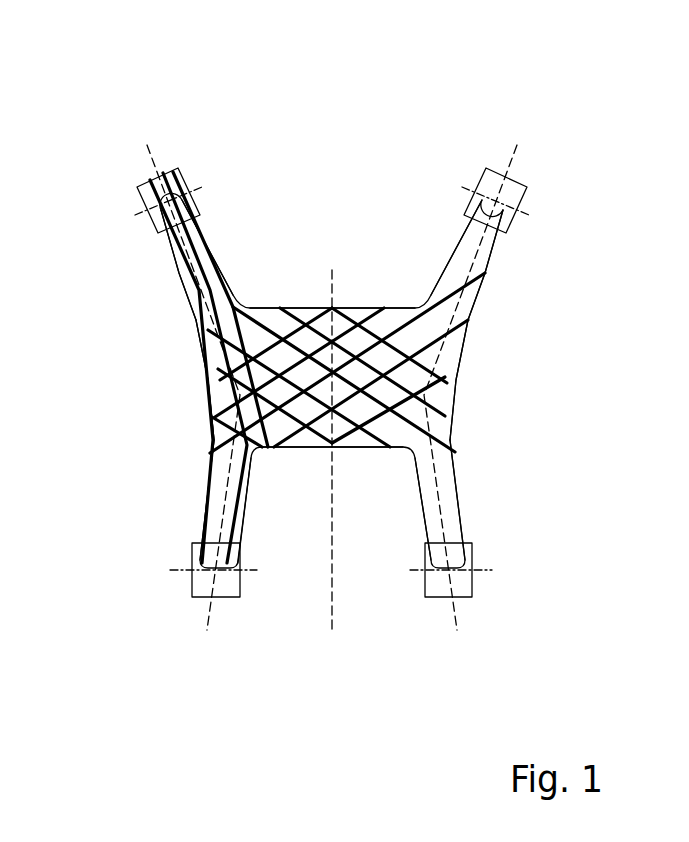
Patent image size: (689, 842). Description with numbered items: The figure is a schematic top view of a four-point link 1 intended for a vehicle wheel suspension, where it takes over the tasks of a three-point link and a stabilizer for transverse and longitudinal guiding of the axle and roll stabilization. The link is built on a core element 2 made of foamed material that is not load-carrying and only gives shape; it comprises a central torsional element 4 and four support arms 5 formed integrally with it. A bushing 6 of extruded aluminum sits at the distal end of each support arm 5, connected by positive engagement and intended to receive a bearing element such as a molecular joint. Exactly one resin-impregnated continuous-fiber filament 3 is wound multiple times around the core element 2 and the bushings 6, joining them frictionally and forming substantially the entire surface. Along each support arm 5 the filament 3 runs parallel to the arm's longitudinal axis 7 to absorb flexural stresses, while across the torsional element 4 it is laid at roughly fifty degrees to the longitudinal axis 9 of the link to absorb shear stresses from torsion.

The four-point link 1 is at (312, 166).
The core element 2 is at (437, 367).
The filament 3 is at (298, 318).
The torsional element 4 is at (371, 283).
The support arm 5 is at (216, 238).
The bushing 6 is at (181, 170).
The longitudinal axis 7 is at (157, 155).
The longitudinal axis 9 is at (332, 597).